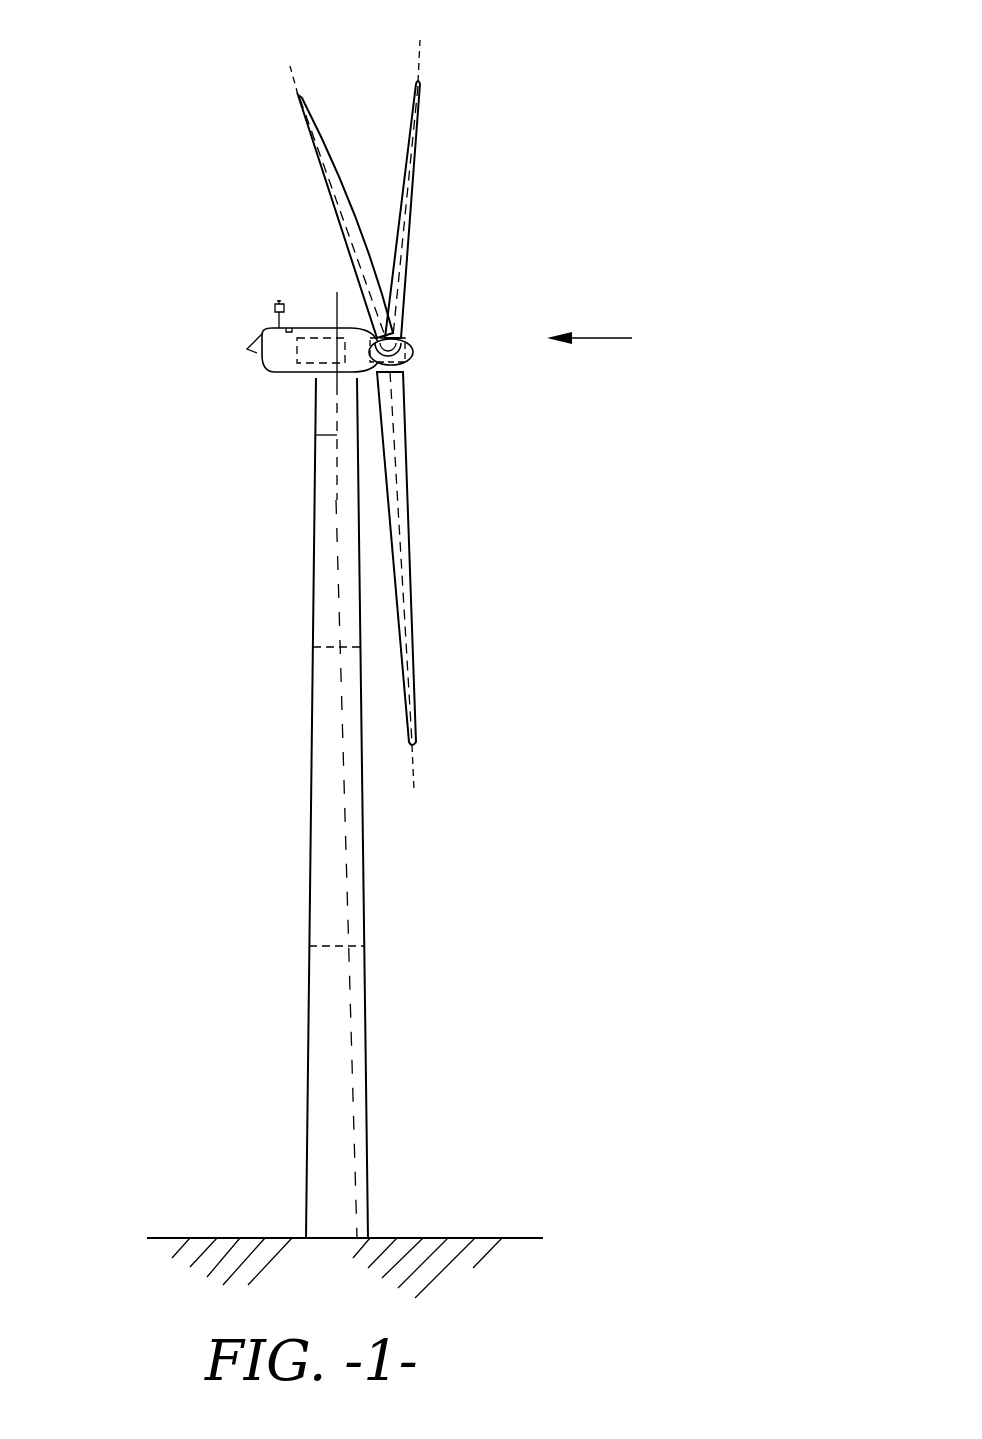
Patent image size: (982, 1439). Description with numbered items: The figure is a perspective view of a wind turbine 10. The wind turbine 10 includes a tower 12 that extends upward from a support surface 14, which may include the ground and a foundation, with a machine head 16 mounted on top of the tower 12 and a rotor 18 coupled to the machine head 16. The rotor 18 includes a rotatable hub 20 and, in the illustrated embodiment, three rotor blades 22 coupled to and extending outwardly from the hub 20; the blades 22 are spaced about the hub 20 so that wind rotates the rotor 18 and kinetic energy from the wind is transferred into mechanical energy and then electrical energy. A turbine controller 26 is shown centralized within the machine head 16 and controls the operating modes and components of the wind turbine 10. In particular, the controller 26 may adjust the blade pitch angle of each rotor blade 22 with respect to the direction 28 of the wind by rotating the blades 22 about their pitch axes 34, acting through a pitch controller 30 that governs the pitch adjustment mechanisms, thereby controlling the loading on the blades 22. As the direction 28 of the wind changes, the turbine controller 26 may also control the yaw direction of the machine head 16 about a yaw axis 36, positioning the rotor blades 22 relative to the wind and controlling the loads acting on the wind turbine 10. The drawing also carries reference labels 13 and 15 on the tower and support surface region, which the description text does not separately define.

The wind turbine 10 is at (522, 160).
The tower 12 is at (316, 918).
The tower sections 13 is at (309, 617).
The support surface 14 is at (230, 1230).
The support surface 15 is at (463, 1237).
The machine head 16 is at (292, 376).
The rotor 18 is at (424, 320).
The rotatable hub 20 is at (414, 357).
The rotor blade 22 is at (348, 193).
The turbine controller 26 is at (312, 325).
The direction of the wind 28 is at (605, 338).
The pitch controller 30 is at (414, 343).
The pitch axis 34 is at (293, 80).
The yaw axis 36 is at (313, 437).